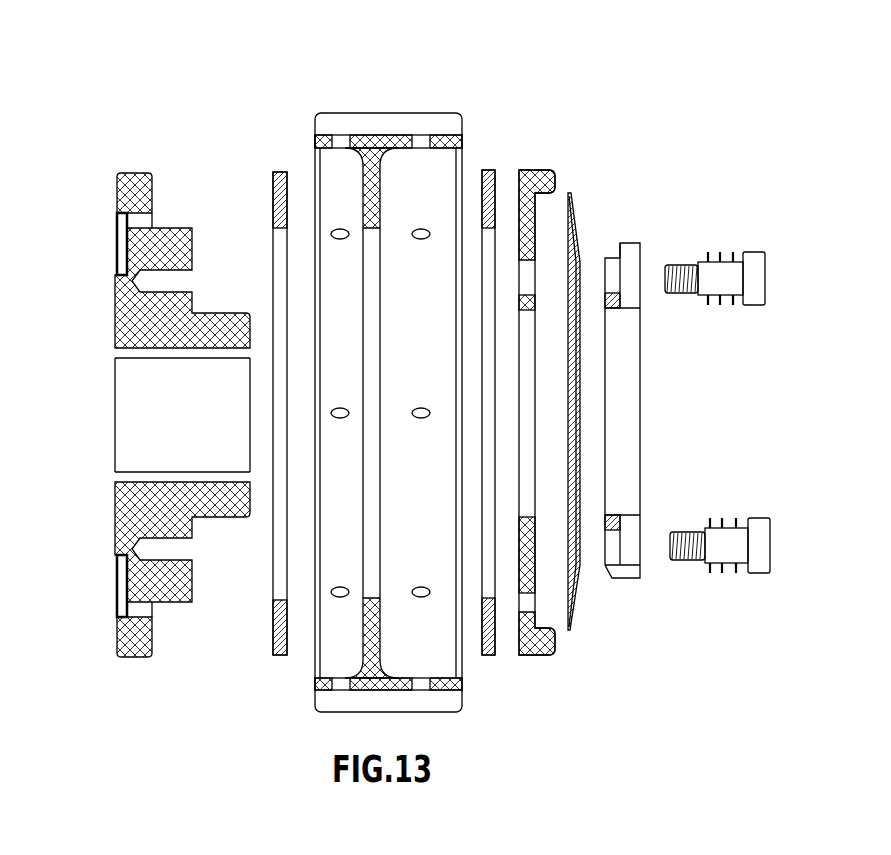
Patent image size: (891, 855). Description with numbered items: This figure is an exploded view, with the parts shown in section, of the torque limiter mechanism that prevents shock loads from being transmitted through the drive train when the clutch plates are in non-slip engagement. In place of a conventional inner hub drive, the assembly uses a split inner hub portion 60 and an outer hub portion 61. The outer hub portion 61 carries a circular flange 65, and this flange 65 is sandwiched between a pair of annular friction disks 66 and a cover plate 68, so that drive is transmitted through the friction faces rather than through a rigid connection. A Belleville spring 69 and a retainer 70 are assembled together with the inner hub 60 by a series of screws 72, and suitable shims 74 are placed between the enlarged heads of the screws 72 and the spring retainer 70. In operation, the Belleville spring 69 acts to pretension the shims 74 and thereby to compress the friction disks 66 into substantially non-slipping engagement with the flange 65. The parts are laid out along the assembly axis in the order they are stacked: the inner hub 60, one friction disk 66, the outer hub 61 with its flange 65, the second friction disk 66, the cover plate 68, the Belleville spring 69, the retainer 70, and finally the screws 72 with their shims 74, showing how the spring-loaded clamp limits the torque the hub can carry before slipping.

The inner hub portion 60 is at (122, 177).
The outer hub portion 61 is at (370, 153).
The circular flange 65 is at (373, 200).
The annular friction disks 66 is at (275, 178).
The cover plate 68 is at (540, 655).
The Belleville spring 69 is at (578, 600).
The retainer 70 is at (640, 578).
The screws 72 is at (765, 278).
The shims 74 is at (720, 302).